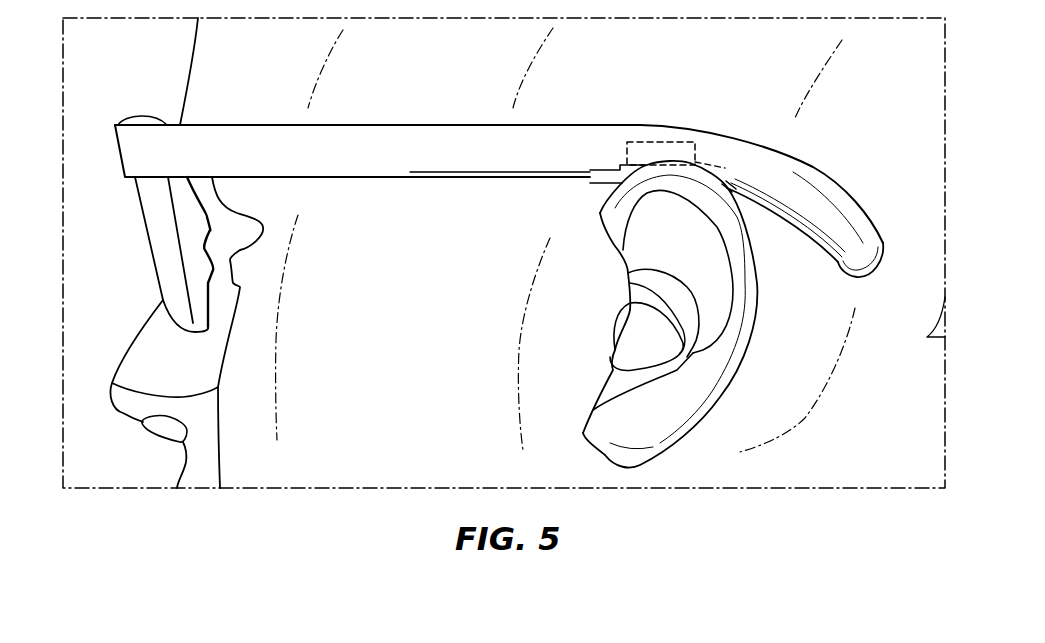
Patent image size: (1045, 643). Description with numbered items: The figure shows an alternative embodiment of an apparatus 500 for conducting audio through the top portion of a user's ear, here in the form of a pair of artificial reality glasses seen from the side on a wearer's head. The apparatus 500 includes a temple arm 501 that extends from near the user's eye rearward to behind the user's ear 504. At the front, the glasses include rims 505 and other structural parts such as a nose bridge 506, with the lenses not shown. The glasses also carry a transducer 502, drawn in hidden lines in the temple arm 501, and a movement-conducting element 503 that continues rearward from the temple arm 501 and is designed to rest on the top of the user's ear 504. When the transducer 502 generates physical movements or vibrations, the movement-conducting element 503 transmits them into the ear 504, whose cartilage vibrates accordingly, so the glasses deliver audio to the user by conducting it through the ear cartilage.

The apparatus 500 is at (478, 181).
The temple arm 501 is at (262, 142).
The transducer 502 is at (662, 142).
The movement-conducting element 503 is at (727, 187).
The user's ear 504 is at (707, 307).
The rims 505 is at (158, 220).
The nose bridge 506 is at (197, 228).